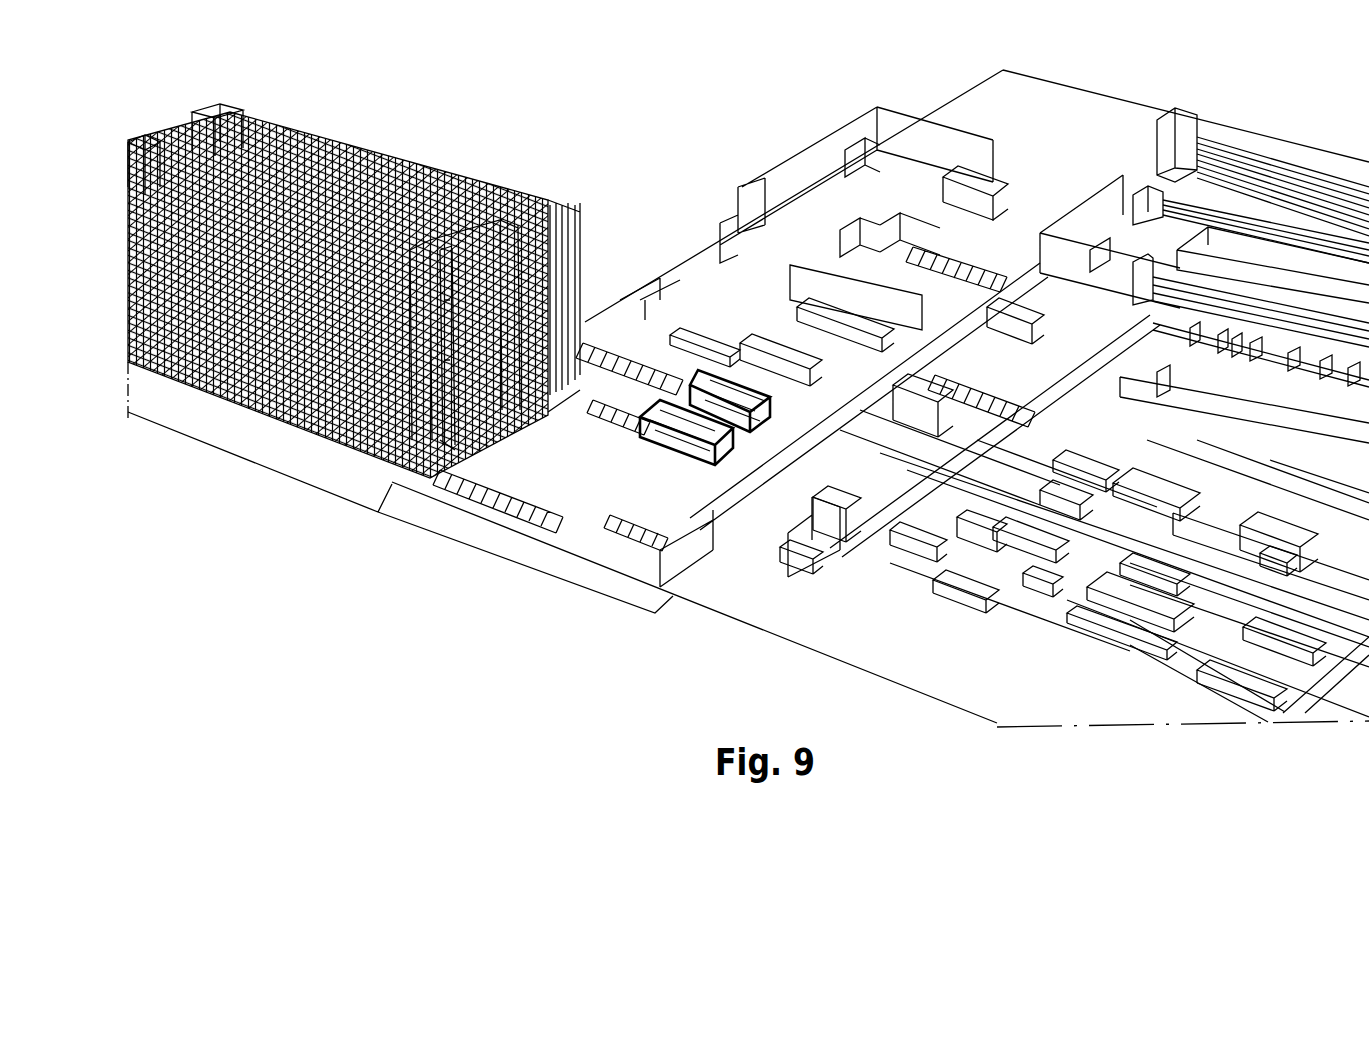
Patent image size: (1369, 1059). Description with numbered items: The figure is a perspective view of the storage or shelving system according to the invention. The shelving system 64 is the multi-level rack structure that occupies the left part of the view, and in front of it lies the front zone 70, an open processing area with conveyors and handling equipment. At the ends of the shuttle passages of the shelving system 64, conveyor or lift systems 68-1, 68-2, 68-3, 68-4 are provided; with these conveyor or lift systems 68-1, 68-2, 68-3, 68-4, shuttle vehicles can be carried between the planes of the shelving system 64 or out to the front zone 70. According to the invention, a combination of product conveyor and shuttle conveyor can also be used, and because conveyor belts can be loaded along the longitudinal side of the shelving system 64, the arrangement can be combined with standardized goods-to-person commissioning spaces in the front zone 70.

The shelving system 64 is at (410, 156).
The conveyor or lift system 68-1 is at (236, 106).
The conveyor or lift system 68-2 is at (142, 140).
The conveyor or lift system 68-3 is at (540, 203).
The conveyor or lift system 68-4 is at (420, 350).
The front zone 70 is at (587, 549).